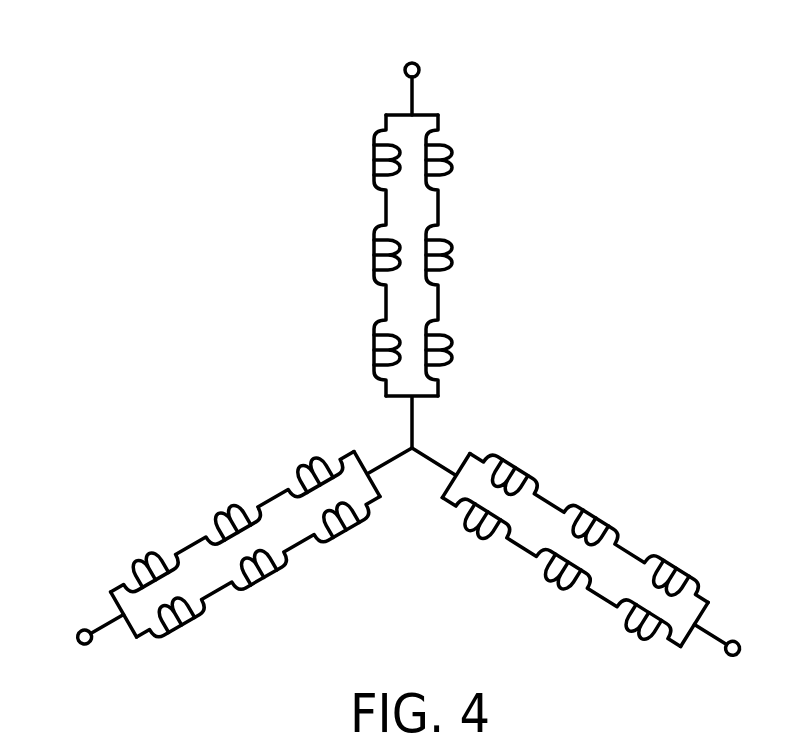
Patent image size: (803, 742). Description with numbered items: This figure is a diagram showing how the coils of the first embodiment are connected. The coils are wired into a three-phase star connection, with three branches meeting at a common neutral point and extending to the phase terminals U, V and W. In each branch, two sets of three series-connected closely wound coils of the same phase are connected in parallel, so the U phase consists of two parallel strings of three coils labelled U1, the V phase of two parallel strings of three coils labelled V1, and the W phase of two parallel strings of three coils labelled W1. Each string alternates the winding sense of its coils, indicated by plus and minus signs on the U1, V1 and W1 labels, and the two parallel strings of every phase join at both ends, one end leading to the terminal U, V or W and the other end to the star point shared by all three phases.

The U-phase terminal U is at (412, 60).
The V-phase terminal V is at (75, 641).
The W-phase terminal W is at (741, 654).
The U-phase coil group U1 is at (404, 281).
The V-phase coil group V1 is at (267, 537).
The W-phase coil group W1 is at (556, 551).